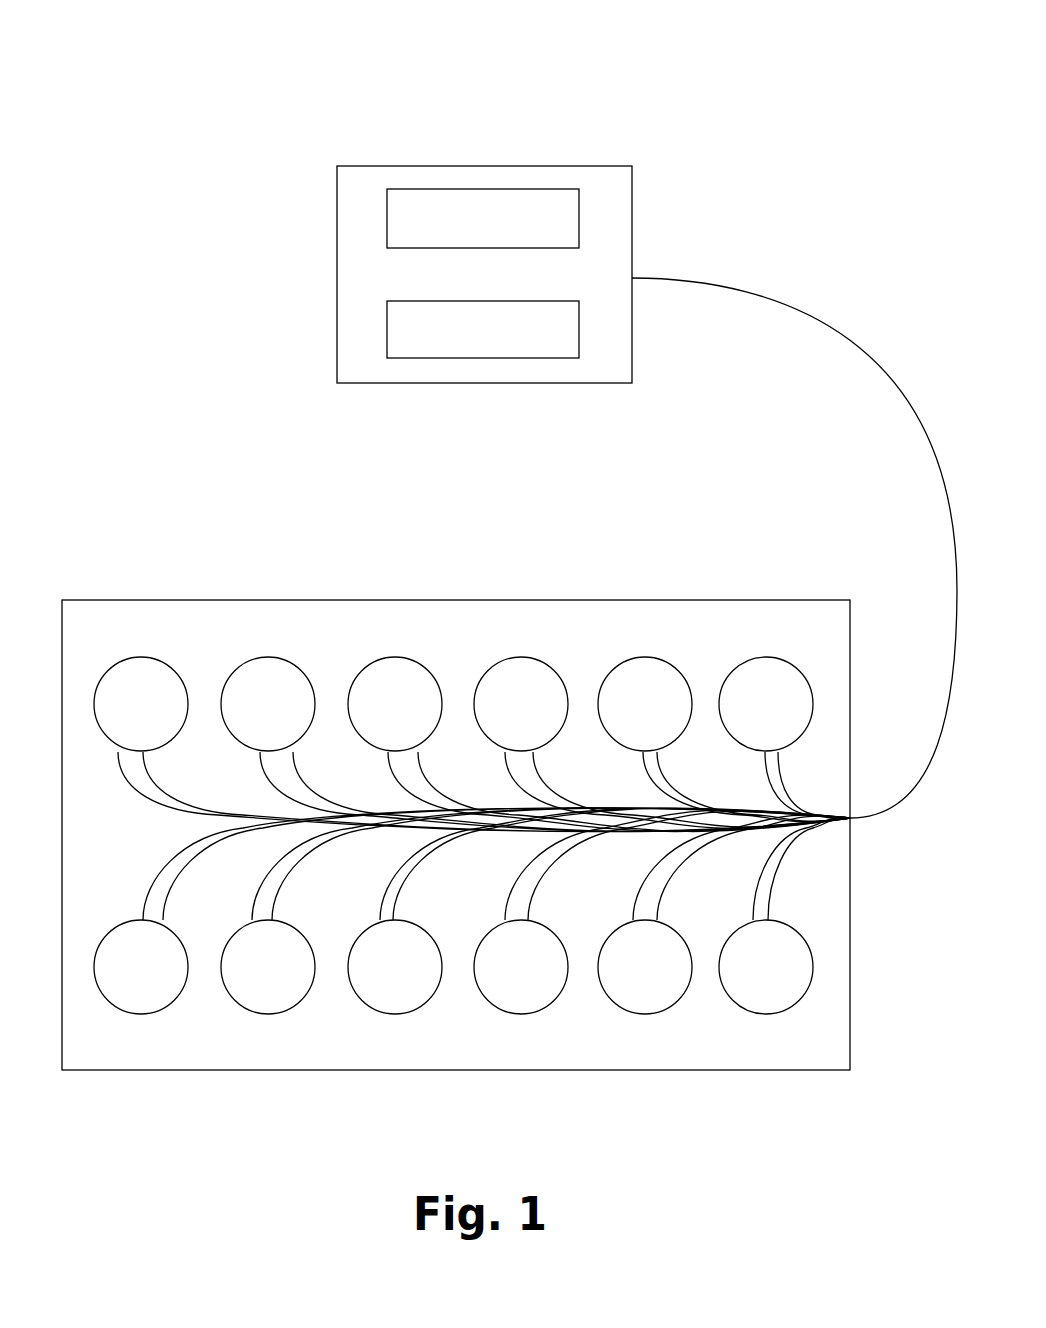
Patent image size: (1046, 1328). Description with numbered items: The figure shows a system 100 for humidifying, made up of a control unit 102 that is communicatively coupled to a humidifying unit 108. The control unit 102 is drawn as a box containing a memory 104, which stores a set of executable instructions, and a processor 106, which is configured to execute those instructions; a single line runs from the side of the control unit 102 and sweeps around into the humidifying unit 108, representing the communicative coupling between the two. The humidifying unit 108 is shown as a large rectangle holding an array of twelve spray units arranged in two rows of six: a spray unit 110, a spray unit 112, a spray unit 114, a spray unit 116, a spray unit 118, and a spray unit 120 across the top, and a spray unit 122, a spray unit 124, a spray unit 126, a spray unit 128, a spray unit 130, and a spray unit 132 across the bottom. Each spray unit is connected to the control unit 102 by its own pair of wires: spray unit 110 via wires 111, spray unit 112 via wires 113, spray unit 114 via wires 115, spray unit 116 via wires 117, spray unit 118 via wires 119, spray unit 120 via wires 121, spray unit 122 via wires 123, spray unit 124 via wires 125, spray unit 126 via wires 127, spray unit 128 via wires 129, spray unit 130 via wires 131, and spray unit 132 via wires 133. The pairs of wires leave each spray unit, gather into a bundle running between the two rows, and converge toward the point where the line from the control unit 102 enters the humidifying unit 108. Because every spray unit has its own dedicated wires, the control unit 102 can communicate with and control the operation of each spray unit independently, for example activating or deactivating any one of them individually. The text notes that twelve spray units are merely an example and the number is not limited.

The system 100 is at (243, 92).
The control unit 102 is at (517, 166).
The memory 104 is at (387, 220).
The processor 106 is at (387, 332).
The humidifying unit 108 is at (83, 600).
The spray unit 110 is at (132, 657).
The wires 111 is at (157, 780).
The spray unit 112 is at (262, 657).
The wires 113 is at (293, 780).
The spray unit 114 is at (397, 657).
The wires 115 is at (435, 780).
The spray unit 116 is at (530, 657).
The wires 117 is at (540, 778).
The spray unit 118 is at (658, 657).
The wires 119 is at (658, 780).
The spray unit 120 is at (783, 657).
The wires 121 is at (773, 797).
The spray unit 122 is at (142, 1016).
The wires 123 is at (192, 878).
The spray unit 124 is at (265, 1016).
The wires 125 is at (287, 878).
The spray unit 126 is at (395, 1016).
The wires 127 is at (407, 880).
The spray unit 128 is at (530, 1016).
The wires 129 is at (533, 878).
The spray unit 130 is at (660, 1016).
The wires 131 is at (658, 878).
The spray unit 132 is at (787, 1016).
The wires 133 is at (770, 878).